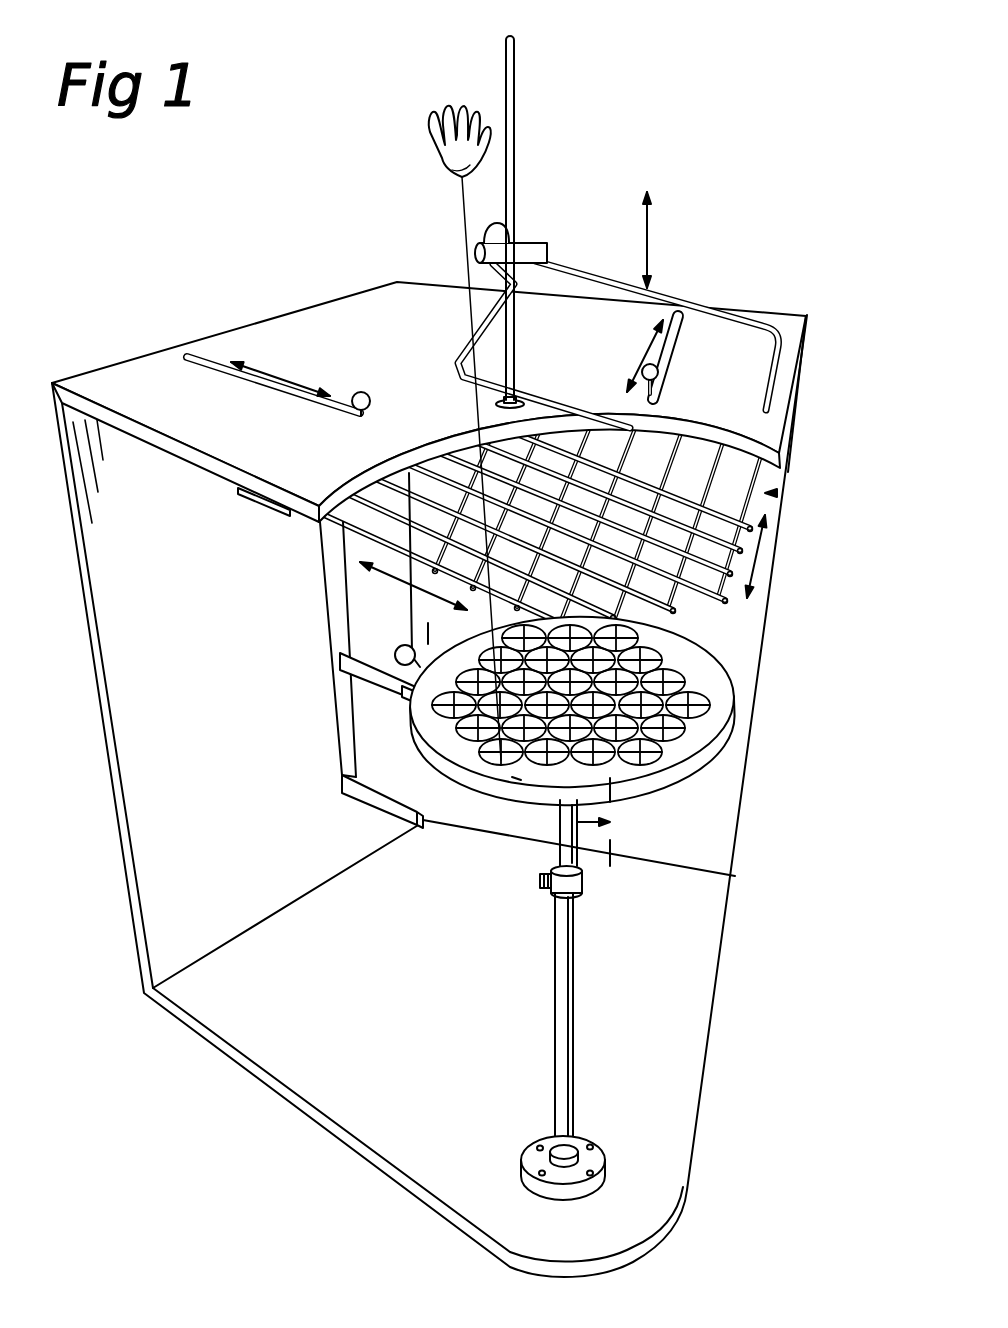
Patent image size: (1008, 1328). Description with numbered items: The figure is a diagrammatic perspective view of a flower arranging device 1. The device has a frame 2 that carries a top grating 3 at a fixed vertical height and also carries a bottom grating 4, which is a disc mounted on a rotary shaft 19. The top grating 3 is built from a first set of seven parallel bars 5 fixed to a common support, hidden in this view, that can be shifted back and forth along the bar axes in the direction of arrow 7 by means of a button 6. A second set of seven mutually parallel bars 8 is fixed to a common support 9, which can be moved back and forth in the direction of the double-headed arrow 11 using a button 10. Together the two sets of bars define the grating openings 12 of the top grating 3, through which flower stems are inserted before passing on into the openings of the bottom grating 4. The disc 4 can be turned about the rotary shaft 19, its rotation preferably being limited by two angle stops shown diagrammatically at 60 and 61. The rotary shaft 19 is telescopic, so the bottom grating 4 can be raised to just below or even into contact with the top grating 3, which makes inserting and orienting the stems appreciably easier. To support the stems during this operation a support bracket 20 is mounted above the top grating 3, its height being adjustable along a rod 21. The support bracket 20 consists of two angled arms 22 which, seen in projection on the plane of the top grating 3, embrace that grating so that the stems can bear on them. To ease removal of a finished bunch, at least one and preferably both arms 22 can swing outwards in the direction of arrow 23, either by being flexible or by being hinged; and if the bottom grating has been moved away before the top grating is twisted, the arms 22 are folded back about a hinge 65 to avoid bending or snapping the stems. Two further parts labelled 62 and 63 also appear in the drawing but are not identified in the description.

The flower arranging device 1 is at (722, 160).
The frame 2 is at (120, 838).
The top grating 3 is at (768, 493).
The bottom grating 4 is at (705, 732).
The bars 5 is at (445, 592).
The button 6 is at (662, 373).
The arrow 7 is at (657, 327).
The bars 8 is at (757, 527).
The common support 9 is at (265, 503).
The button 10 is at (370, 402).
The double-headed arrow 11 is at (287, 378).
The grating openings 12 is at (693, 590).
The rotary shaft 19 is at (562, 990).
The support bracket 20 is at (548, 243).
The rod 21 is at (514, 82).
The angled arms 22 is at (766, 326).
The arrow 23 is at (650, 243).
The angle stop 60 is at (410, 646).
The angle stop 61 is at (612, 842).
The horizontal arm 62 is at (340, 655).
The lower arm 63 is at (387, 813).
The hinge 65 is at (486, 228).